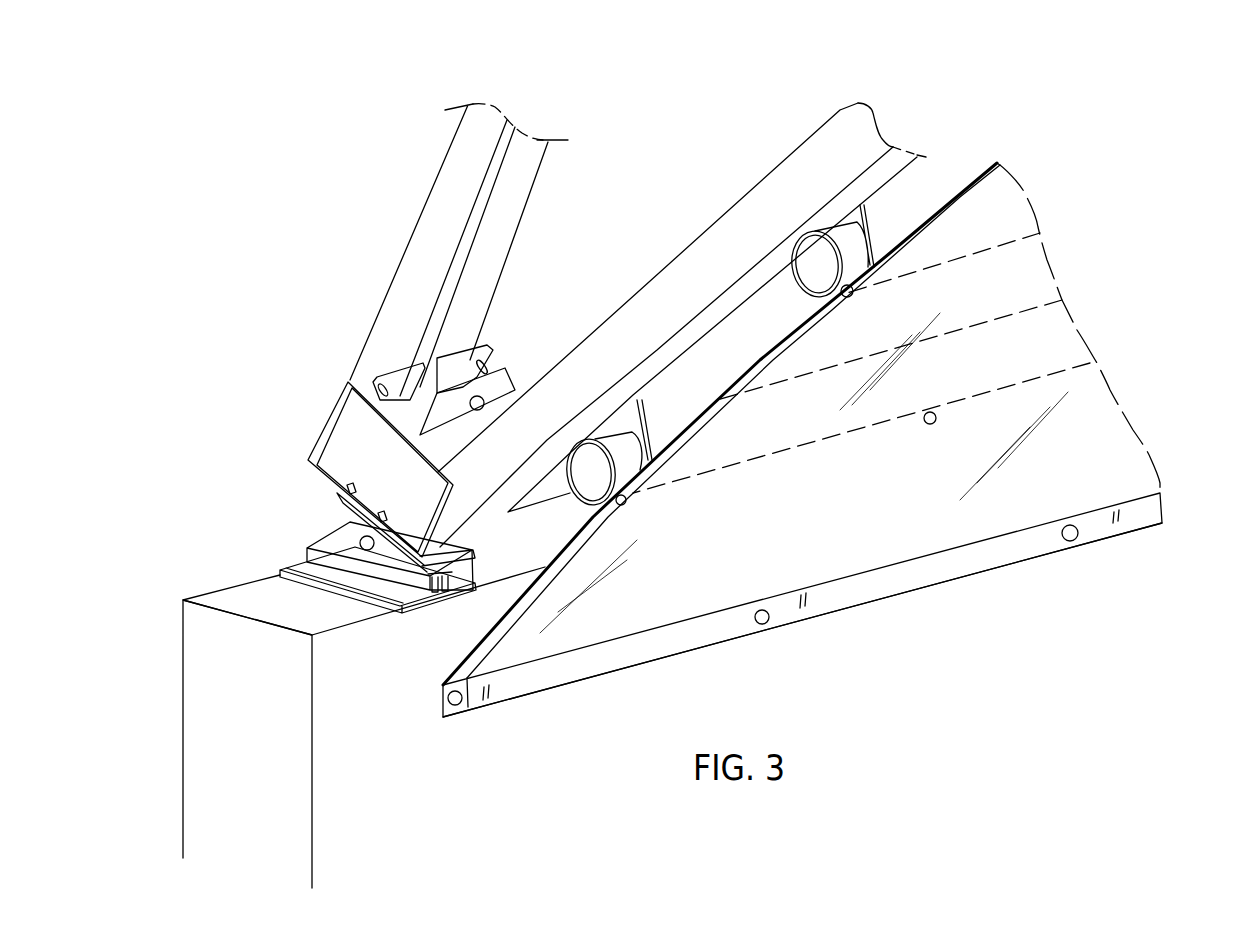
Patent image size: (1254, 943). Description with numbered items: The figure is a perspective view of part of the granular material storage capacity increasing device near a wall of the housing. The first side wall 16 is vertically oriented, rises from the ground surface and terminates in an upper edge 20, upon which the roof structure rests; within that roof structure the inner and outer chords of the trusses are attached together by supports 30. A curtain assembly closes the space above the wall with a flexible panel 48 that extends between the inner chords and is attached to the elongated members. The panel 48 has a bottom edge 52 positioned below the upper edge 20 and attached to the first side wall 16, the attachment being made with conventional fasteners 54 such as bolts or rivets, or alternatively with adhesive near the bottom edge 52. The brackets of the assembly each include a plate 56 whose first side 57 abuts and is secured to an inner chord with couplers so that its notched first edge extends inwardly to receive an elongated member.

The first side wall 16 is at (208, 623).
The upper edge 20 is at (227, 600).
The supports 30 is at (990, 575).
The flexible panel 48 is at (1103, 447).
The bottom edge 52 is at (607, 673).
The fasteners 54 is at (847, 291).
The plate 56 is at (637, 400).
The first side 57 is at (862, 215).